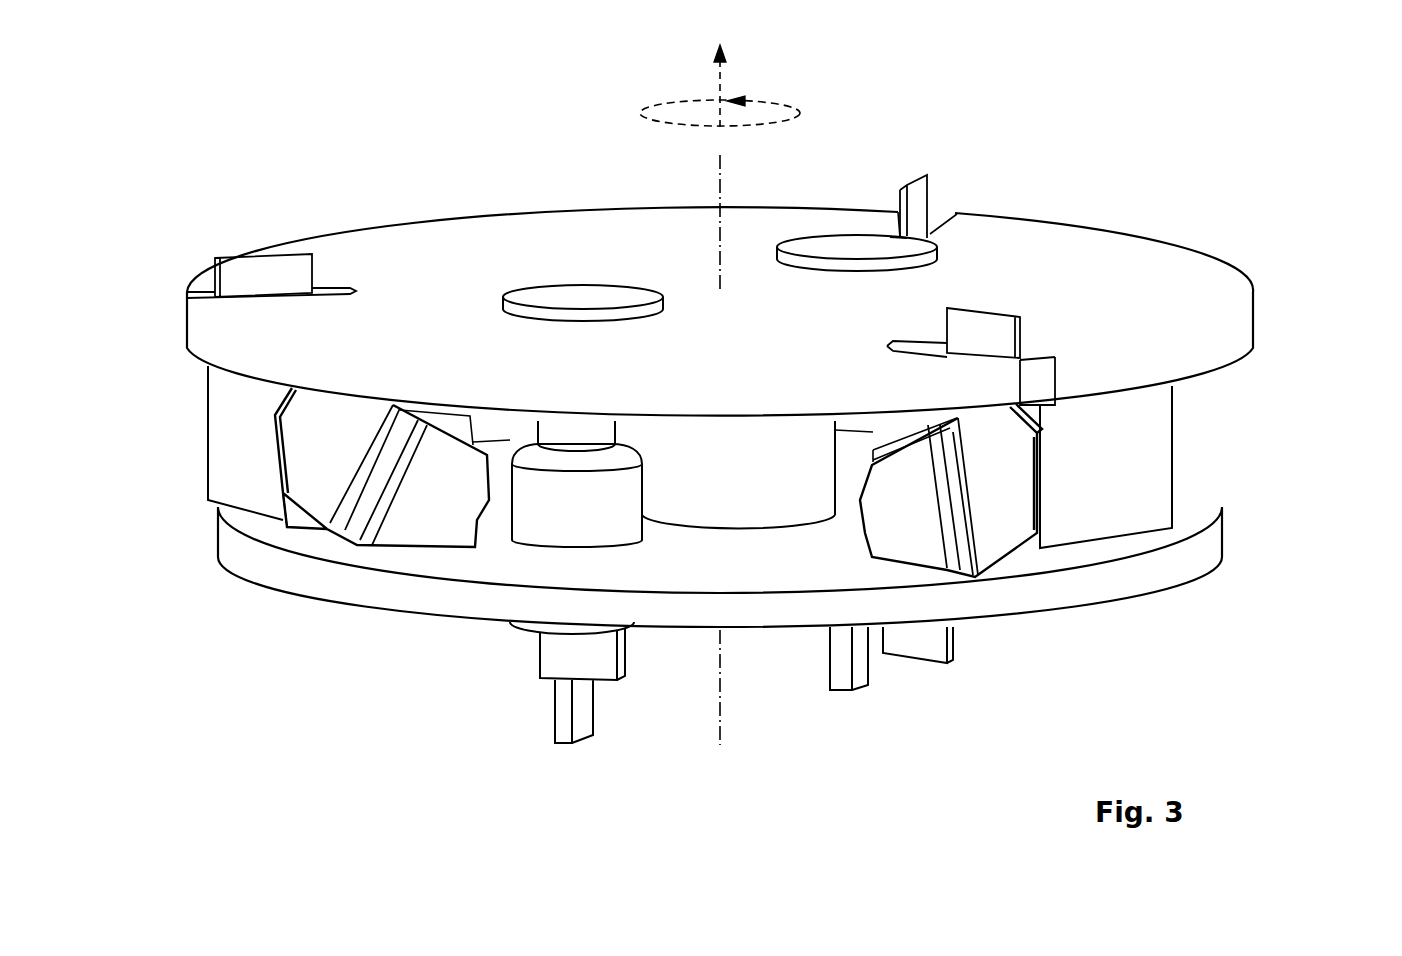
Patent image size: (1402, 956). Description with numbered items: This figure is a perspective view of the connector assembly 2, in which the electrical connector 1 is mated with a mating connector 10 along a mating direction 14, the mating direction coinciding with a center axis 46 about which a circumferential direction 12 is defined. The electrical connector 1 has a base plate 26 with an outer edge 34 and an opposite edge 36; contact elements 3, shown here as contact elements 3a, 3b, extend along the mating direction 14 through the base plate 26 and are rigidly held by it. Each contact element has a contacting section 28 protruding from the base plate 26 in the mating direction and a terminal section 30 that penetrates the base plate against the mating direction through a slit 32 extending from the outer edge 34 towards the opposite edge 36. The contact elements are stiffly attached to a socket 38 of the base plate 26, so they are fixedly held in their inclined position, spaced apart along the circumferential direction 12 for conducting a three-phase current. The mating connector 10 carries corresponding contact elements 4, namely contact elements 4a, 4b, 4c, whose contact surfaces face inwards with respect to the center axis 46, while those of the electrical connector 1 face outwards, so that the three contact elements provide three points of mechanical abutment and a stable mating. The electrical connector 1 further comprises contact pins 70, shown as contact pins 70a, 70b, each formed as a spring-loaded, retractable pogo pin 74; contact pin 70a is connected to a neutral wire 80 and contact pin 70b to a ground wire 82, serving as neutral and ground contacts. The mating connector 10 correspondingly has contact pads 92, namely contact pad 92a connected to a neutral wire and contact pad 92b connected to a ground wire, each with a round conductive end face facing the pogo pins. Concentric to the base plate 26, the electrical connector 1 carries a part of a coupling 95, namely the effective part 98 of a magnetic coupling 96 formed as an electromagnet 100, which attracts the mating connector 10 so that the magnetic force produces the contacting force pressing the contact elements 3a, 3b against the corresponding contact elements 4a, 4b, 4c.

The electrical connector 1 is at (1247, 539).
The connector assembly 2 is at (1105, 103).
The contact elements 3 is at (378, 545).
The contact element 3a is at (427, 508).
The contact element 3b is at (933, 515).
The corresponding contact elements 4 is at (602, 427).
The corresponding contact element 4a is at (298, 537).
The corresponding contact element 4b is at (977, 547).
The corresponding contact element 4c is at (917, 202).
The mating connector 10 is at (784, 293).
The circumferential direction 12 is at (780, 105).
The mating direction 14 is at (718, 80).
The base plate 26 is at (784, 405).
The contacting section 28 is at (1190, 437).
The terminal section 30 is at (933, 676).
The slit 32 is at (165, 307).
The outer edge 34 is at (215, 276).
The opposite edge 36 is at (1255, 300).
The socket 38 is at (215, 417).
The center axis 46 is at (720, 168).
The contact pin 70 is at (622, 586).
The contact pin 70a is at (537, 510).
The contact pin 70b is at (734, 586).
The pogo pin 74 is at (622, 586).
The neutral wire 80 is at (562, 727).
The ground wire 82 is at (858, 672).
The contact pad 92 is at (696, 195).
The contact pad 92a is at (550, 290).
The contact pad 92b is at (850, 245).
The coupling 95 is at (728, 586).
The magnetic coupling 96 is at (728, 586).
The effective part 98 is at (728, 586).
The electromagnet 100 is at (677, 478).